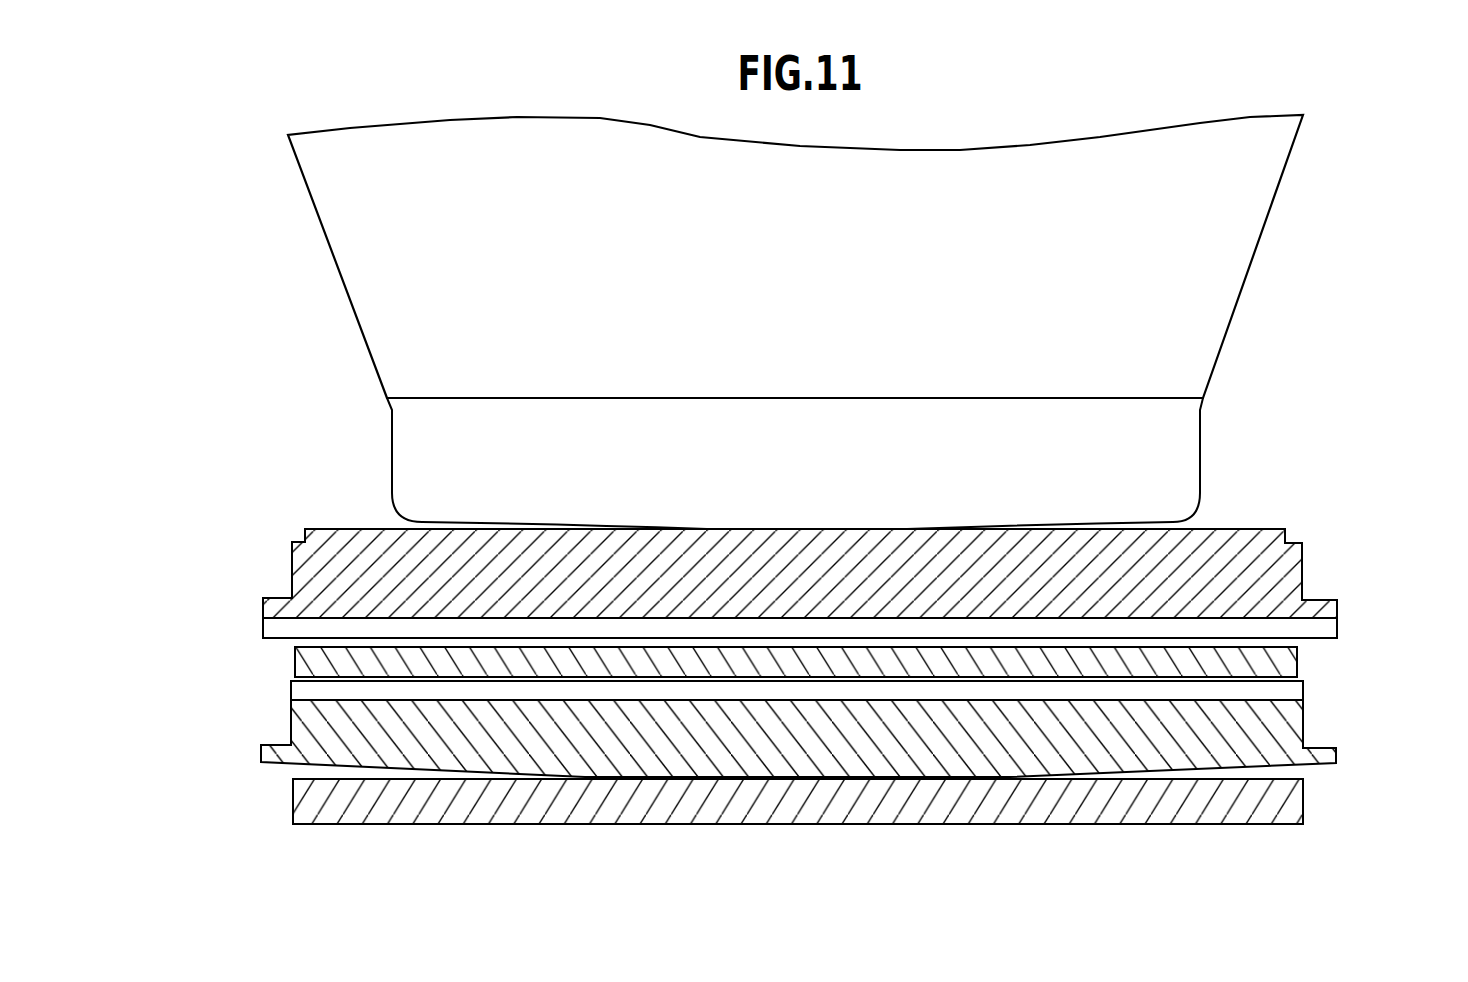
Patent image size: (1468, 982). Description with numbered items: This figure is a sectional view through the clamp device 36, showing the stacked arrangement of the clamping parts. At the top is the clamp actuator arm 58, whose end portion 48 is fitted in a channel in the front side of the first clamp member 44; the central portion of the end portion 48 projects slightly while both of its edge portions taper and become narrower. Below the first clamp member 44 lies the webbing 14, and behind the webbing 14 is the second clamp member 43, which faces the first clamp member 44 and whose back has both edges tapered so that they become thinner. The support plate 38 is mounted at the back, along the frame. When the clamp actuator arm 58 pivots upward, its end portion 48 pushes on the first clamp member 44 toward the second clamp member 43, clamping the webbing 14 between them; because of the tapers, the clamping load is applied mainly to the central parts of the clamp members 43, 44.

The clamp actuator arm 58 is at (1193, 218).
The end portion 48 is at (427, 448).
The first clamp member 44 is at (1217, 573).
The webbing 14 is at (320, 672).
The second clamp member 43 is at (1212, 740).
The support plate 38 is at (1242, 810).
The clamp device 36 is at (792, 716).